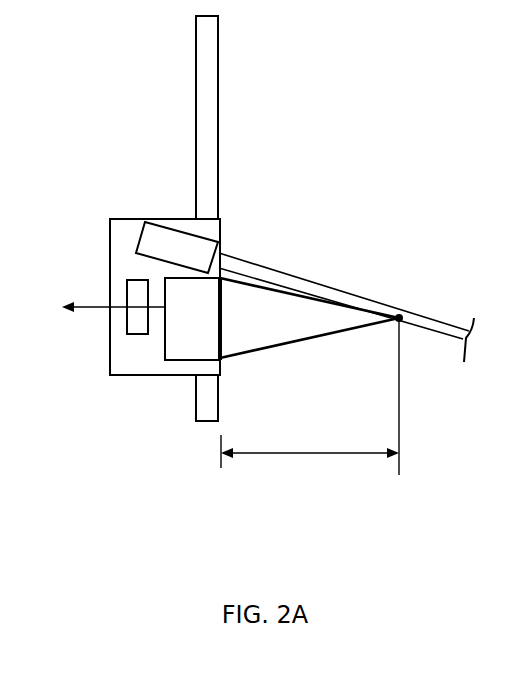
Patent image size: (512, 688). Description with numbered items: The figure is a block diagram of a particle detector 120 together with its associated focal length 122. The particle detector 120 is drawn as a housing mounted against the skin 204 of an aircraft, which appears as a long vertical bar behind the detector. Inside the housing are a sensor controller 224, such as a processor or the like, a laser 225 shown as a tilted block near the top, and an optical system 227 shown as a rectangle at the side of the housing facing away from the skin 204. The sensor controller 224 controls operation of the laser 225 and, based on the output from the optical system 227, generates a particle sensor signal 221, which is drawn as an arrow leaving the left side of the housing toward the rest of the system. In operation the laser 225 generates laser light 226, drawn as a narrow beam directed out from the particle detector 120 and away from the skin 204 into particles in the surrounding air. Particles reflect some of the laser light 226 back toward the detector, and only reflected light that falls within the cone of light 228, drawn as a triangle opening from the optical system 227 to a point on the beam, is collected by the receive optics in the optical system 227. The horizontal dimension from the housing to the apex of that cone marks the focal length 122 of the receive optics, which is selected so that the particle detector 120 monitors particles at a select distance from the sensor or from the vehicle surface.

The particle detector 120 is at (138, 357).
The focal length 122 is at (289, 455).
The skin 204 is at (208, 160).
The particle sensor signal 221 is at (87, 308).
The sensor controller 224 is at (137, 295).
The laser 225 is at (165, 243).
The laser light 226 is at (280, 278).
The optical system 227 is at (190, 327).
The cone of light 228 is at (292, 322).